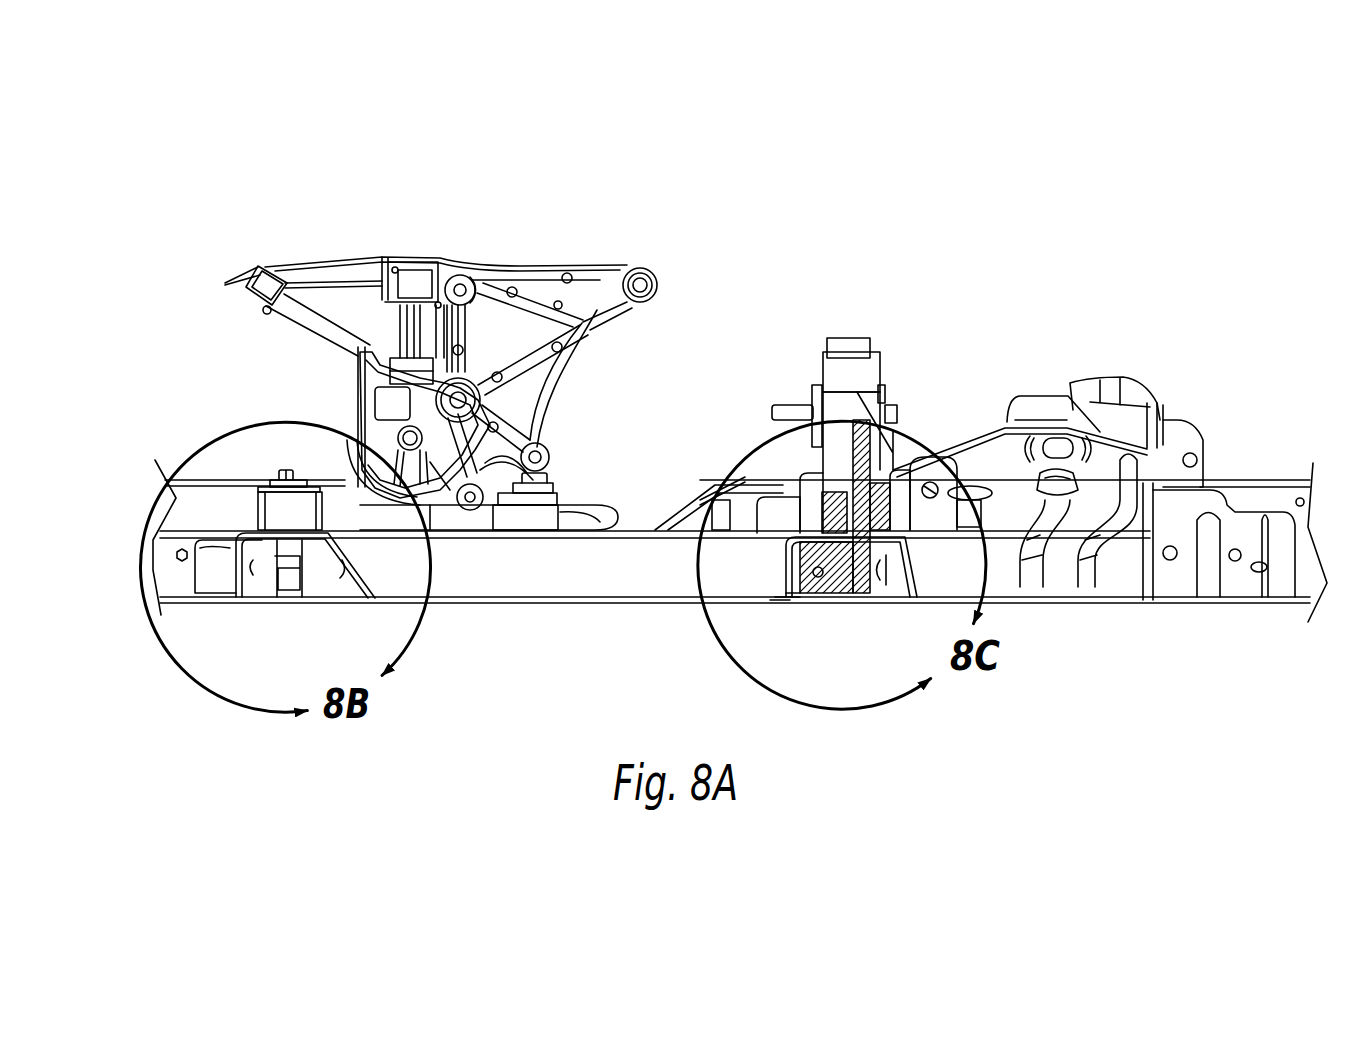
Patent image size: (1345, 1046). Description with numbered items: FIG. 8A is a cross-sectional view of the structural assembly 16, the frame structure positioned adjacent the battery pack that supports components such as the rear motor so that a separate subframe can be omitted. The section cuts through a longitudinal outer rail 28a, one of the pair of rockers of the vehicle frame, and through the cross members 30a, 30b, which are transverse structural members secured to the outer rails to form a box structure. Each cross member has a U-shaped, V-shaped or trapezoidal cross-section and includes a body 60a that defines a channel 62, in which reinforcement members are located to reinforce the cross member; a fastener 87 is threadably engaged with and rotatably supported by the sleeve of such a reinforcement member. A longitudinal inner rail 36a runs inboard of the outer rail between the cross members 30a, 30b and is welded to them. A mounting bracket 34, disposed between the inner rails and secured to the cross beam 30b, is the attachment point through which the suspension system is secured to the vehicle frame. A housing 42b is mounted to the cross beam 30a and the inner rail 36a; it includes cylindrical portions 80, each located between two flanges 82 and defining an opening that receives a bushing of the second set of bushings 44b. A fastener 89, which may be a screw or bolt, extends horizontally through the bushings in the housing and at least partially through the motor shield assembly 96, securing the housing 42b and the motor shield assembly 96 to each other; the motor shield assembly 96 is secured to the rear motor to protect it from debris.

The structural assembly 16 is at (784, 131).
The longitudinal outer rail 28a is at (183, 572).
The cross member 30a is at (268, 613).
The cross member 30b is at (788, 614).
The mounting bracket 34 is at (1127, 568).
The longitudinal inner rail 36a is at (504, 571).
The housing 42b is at (337, 507).
The second set of bushings 44b is at (887, 500).
The body 60a is at (253, 528).
The channel 62 is at (284, 578).
The cylindrical portion 80 is at (855, 340).
The flange 82 is at (543, 517).
The fastener 87 is at (293, 468).
The fastener 89 is at (797, 410).
The motor shield assembly 96 is at (455, 262).